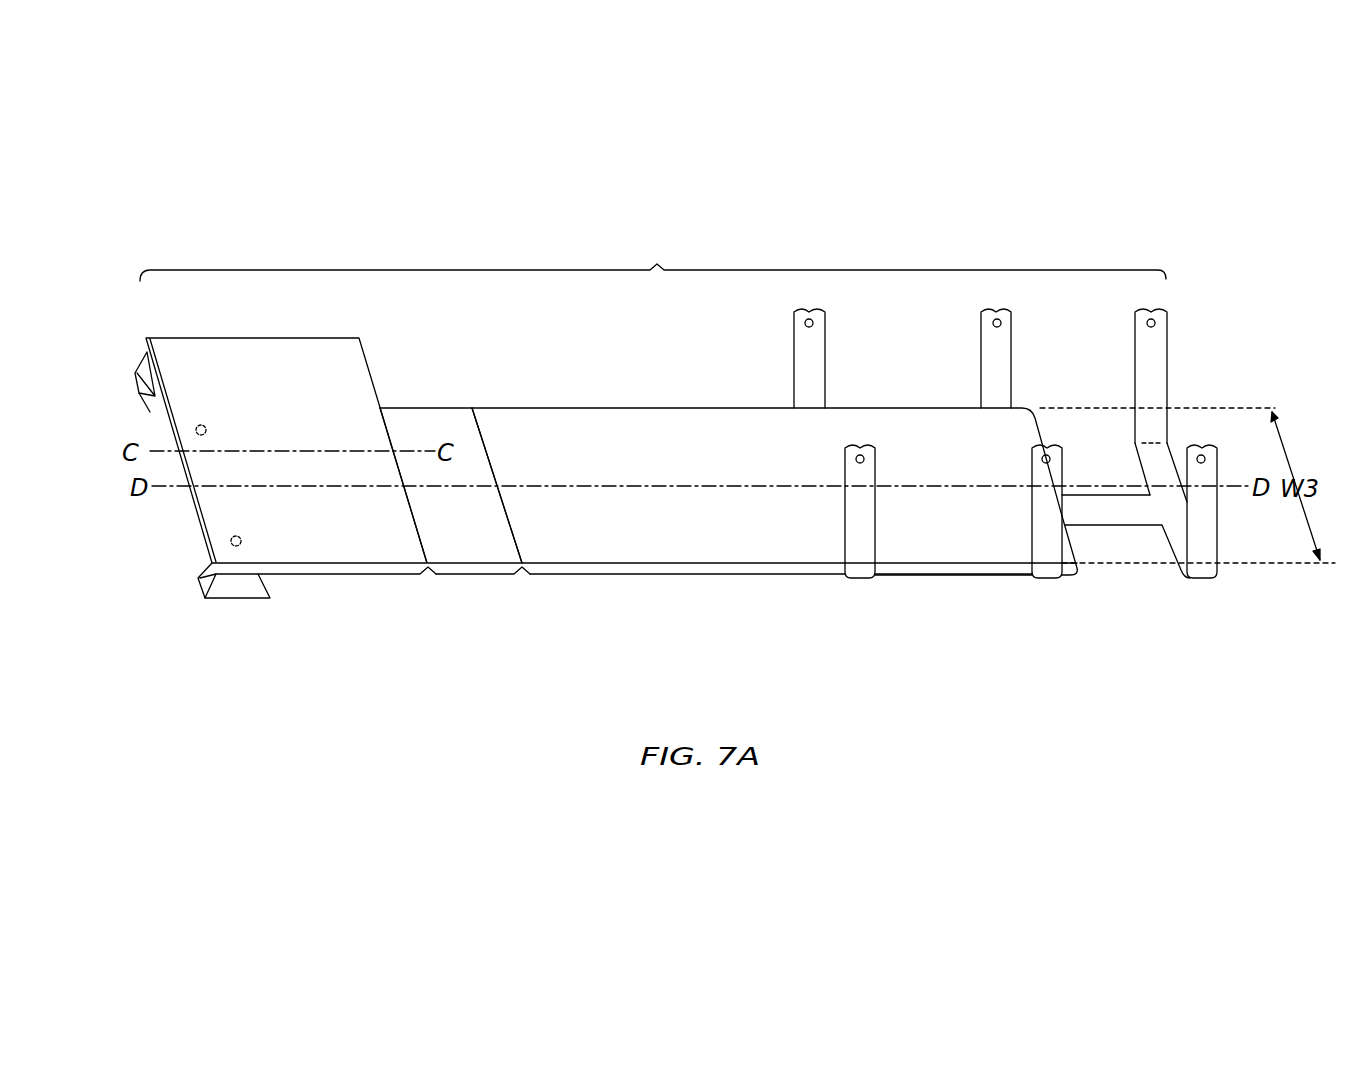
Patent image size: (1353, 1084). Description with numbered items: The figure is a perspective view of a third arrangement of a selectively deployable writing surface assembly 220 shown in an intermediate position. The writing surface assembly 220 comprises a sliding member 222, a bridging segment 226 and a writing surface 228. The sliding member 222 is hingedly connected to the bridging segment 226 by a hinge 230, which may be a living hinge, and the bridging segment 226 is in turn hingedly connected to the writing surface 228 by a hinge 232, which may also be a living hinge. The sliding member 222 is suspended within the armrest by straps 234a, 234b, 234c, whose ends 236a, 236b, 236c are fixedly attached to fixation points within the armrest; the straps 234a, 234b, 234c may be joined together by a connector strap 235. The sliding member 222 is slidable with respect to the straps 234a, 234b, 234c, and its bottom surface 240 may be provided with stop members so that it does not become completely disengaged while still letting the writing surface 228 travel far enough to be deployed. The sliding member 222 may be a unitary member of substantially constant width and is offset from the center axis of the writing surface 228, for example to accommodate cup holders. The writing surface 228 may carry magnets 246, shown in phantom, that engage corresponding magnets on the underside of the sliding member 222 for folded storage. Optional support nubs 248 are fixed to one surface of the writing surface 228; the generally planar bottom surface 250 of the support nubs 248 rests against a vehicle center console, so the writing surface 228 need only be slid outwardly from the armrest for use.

The writing surface assembly 220 is at (653, 260).
The sliding member 222 is at (637, 398).
The bridging segment 226 is at (424, 398).
The writing surface 228 is at (298, 330).
The hinge 230 is at (528, 580).
The hinge 232 is at (434, 580).
The strap 234a is at (810, 360).
The strap 234b is at (997, 360).
The strap 234c is at (1151, 360).
The connector strap 235 is at (1113, 513).
The strap end 236a is at (812, 319).
The strap end 236b is at (999, 319).
The strap end 236c is at (1153, 319).
The bottom surface 240 is at (978, 578).
The magnet 246 is at (200, 424).
The support nub 248 is at (135, 378).
The bottom surface 250 is at (150, 398).